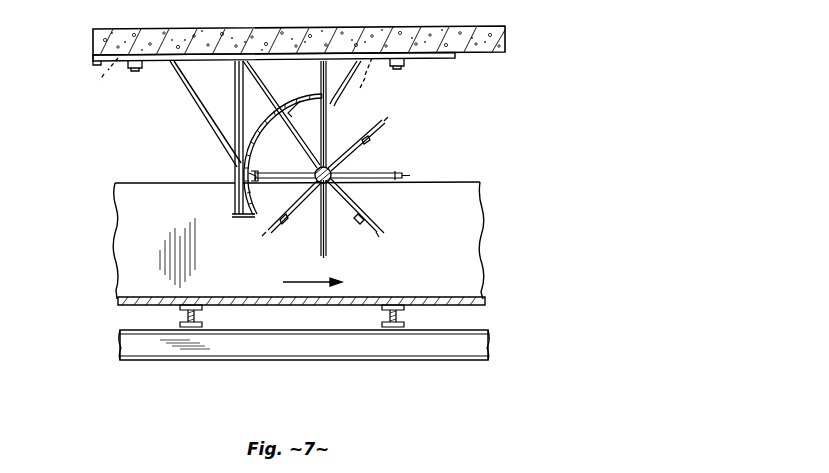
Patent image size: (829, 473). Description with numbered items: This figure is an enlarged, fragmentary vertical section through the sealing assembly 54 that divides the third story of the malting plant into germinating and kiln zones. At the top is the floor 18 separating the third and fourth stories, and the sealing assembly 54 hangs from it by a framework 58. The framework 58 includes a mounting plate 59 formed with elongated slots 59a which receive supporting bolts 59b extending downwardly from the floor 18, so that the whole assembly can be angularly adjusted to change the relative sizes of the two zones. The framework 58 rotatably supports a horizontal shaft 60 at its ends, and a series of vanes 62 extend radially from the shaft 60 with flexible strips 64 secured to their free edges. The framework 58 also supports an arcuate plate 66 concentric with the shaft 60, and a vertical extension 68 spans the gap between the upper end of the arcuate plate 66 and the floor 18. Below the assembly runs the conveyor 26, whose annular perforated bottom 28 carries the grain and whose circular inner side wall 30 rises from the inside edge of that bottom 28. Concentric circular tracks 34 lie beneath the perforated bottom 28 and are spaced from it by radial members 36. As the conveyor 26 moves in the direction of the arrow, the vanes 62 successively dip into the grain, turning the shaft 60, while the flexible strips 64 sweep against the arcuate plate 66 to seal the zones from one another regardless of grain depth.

The floor 18 is at (437, 56).
The mounting plate 59 is at (95, 62).
The elongated slots 59a is at (372, 95).
The supporting bolts 59b is at (140, 70).
The framework 58 is at (200, 118).
The vertical extension 68 is at (322, 73).
The sealing assembly 54 is at (408, 131).
The horizontal shaft 60 is at (313, 182).
The vanes 62 is at (366, 180).
The flexible strips 64 is at (378, 235).
The arcuate plate 66 is at (250, 138).
The inner side wall 30 is at (470, 193).
The conveyor 26 is at (102, 234).
The perforated bottom 28 is at (422, 297).
The radial members 36 is at (398, 316).
The tracks 34 is at (430, 348).